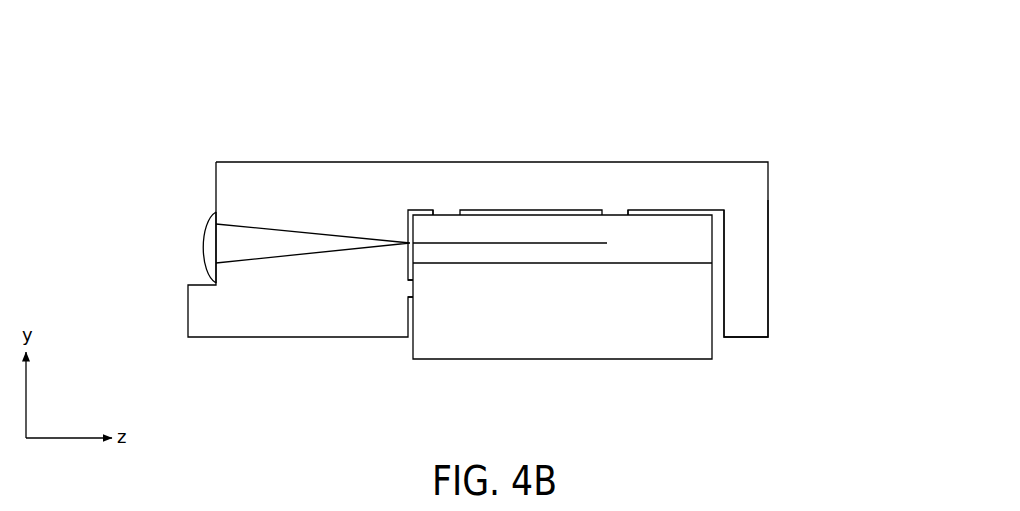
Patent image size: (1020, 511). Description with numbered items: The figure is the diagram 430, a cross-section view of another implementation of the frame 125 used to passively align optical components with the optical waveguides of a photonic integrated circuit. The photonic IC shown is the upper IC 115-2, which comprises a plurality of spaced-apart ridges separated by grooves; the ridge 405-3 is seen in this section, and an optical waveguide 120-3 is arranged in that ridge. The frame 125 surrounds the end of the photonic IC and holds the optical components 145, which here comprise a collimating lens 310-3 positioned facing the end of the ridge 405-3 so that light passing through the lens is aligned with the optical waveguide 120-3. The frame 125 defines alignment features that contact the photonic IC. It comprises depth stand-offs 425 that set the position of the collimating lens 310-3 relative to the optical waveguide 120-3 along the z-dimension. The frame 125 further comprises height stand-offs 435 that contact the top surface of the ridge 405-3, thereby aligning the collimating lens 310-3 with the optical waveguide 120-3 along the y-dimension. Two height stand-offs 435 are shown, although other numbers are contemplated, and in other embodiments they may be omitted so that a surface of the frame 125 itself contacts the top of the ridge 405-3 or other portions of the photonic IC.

The diagram 430 is at (787, 133).
The frame 125 is at (786, 297).
The collimating lens 310-3 is at (205, 228).
The optical components 145 is at (195, 263).
The upper IC 115-2 is at (672, 323).
The optical waveguide 120-3 is at (542, 245).
The ridge 405-3 is at (412, 220).
The height stand-offs 435 is at (448, 207).
The depth stand-offs 425 is at (400, 288).